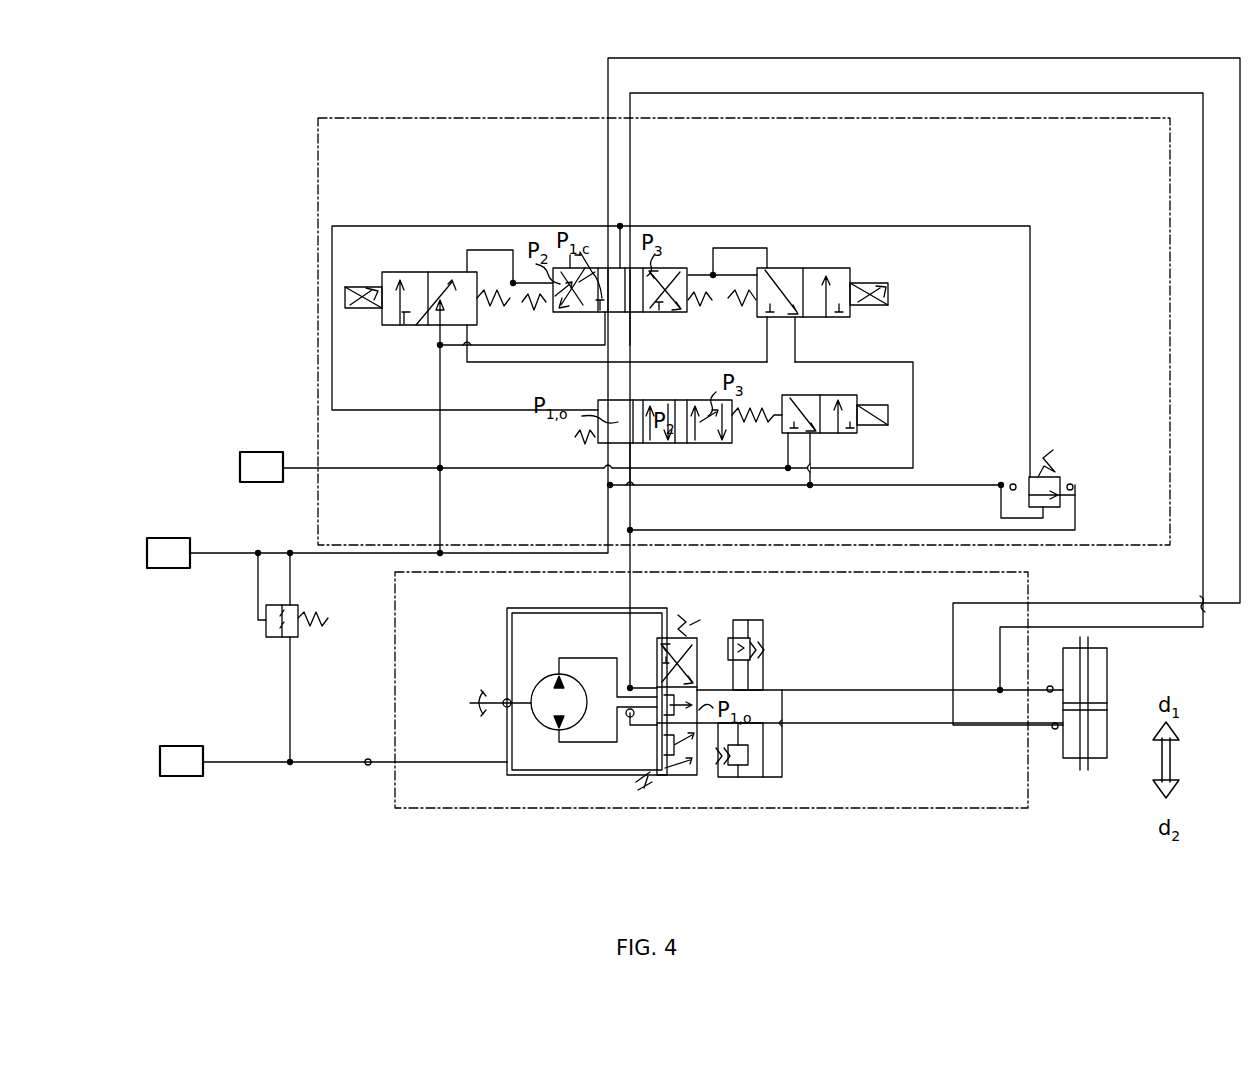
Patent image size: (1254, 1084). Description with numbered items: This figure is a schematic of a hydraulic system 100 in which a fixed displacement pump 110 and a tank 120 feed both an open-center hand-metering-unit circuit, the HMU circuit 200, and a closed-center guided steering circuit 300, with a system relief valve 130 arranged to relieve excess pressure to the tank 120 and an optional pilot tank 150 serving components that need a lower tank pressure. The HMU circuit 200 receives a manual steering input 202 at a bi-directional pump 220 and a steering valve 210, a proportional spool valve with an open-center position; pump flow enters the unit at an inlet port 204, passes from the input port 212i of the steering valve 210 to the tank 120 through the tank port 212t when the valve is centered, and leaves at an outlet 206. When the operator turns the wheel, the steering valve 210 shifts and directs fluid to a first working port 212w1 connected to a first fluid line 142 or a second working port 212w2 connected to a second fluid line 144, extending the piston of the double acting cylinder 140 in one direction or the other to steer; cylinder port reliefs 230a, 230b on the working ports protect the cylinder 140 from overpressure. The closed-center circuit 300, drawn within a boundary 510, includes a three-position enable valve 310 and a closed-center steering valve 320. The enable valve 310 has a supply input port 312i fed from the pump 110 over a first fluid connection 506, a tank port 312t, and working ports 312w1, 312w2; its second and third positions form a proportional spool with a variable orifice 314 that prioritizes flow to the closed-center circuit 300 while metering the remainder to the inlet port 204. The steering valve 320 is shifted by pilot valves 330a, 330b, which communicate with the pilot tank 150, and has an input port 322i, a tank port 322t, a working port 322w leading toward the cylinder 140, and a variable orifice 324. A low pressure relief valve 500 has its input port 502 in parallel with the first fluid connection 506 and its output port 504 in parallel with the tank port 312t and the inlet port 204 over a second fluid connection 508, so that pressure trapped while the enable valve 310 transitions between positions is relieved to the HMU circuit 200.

The hydraulic system 100 is at (214, 88).
The fixed displacement pump 110 is at (176, 538).
The tank 120 is at (180, 746).
The system relief valve 130 is at (266, 628).
The hydraulic cylinder 140 is at (1110, 670).
The first fluid line 142 is at (1050, 688).
The second fluid line 144 is at (1055, 728).
The pilot tank 150 is at (258, 452).
The HMU circuit 200 is at (487, 808).
The manual steering input 202 is at (470, 703).
The inlet port 204 is at (630, 558).
The outlet 206 is at (370, 758).
The steering valve 210 is at (692, 643).
The input port 212i is at (646, 685).
The tank port 212t is at (656, 744).
The first working port 212w1 is at (703, 688).
The second working port 212w2 is at (699, 736).
The bi-directional pump 220 is at (507, 632).
The cylinder port relief 230a is at (736, 642).
The cylinder port relief 230b is at (748, 760).
The closed-center circuit 300 is at (432, 118).
The enable valve 310 is at (718, 445).
The supply input port 312i is at (598, 441).
The tank port 312t is at (634, 456).
The pilot valve first work port 312w1 is at (612, 400).
The pilot valve second work port 312w2 is at (628, 402).
The variable orifice 314 is at (699, 422).
The steering valve 320 is at (666, 271).
The input port 322i is at (606, 317).
The main valve tank port 322t is at (632, 315).
The working port 322w is at (618, 260).
The variable orifice 324 is at (562, 305).
The pilot valve 330a is at (832, 318).
The pilot valve 330b is at (410, 325).
The relief valve 500 is at (1060, 505).
The input port 502 is at (1013, 486).
The output port 504 is at (1070, 486).
The first fluid connection 506 is at (608, 485).
The return line 508 is at (658, 520).
The valve block 510 is at (968, 238).